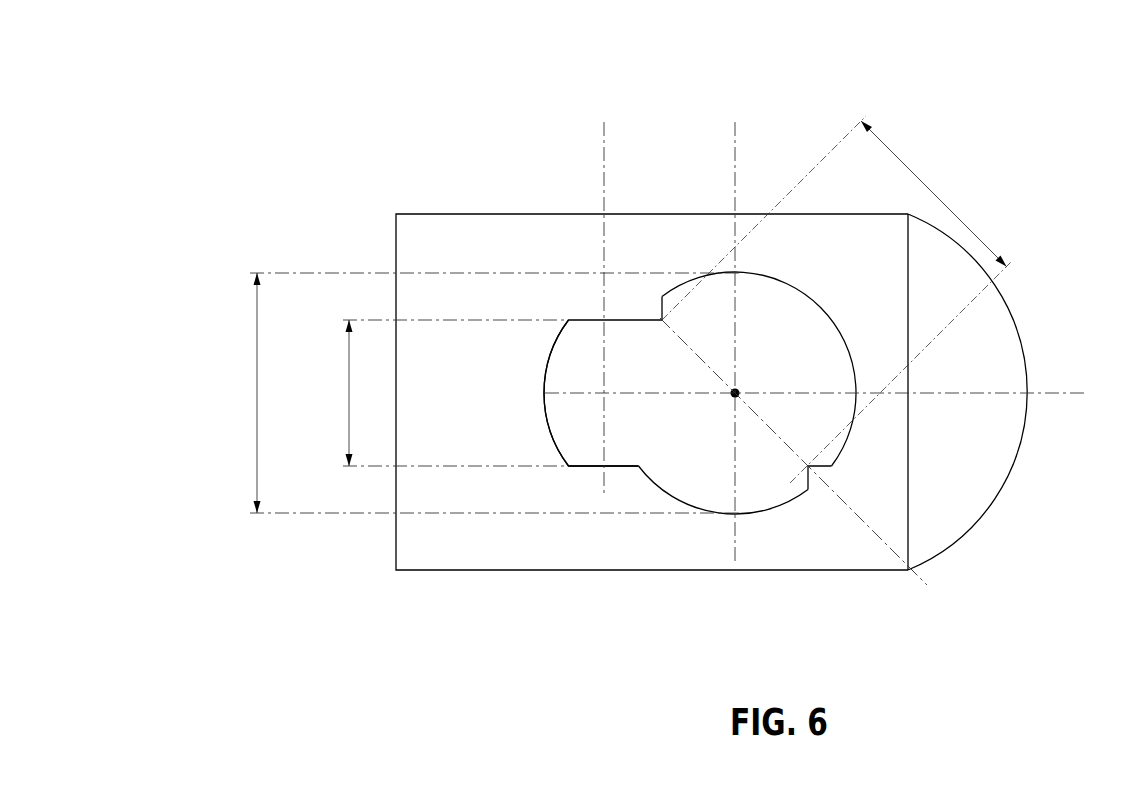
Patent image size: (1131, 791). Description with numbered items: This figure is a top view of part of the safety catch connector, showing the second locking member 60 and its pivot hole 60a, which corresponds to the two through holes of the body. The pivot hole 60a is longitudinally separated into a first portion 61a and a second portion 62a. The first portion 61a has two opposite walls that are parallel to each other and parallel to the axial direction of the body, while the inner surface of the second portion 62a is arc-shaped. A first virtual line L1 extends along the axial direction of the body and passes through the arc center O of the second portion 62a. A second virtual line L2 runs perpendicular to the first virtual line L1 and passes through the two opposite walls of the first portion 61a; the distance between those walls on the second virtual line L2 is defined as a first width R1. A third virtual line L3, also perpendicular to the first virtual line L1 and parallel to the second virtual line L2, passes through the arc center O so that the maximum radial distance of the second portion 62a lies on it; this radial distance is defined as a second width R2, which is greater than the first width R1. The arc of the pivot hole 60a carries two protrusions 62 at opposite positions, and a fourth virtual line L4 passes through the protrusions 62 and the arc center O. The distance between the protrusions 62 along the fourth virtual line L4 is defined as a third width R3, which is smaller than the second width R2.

The second locking member 60 is at (406, 147).
The pivot hole 60a is at (685, 681).
The first portion 61a is at (577, 468).
The second portion 62a is at (677, 500).
The protrusion 62 is at (662, 298).
The arc center O is at (735, 393).
The first virtual line L1 is at (836, 393).
The second virtual line L2 is at (614, 289).
The third virtual line L3 is at (738, 324).
The fourth virtual line L4 is at (813, 463).
The first width R1 is at (443, 393).
The second width R2 is at (484, 393).
The third width R3 is at (837, 299).